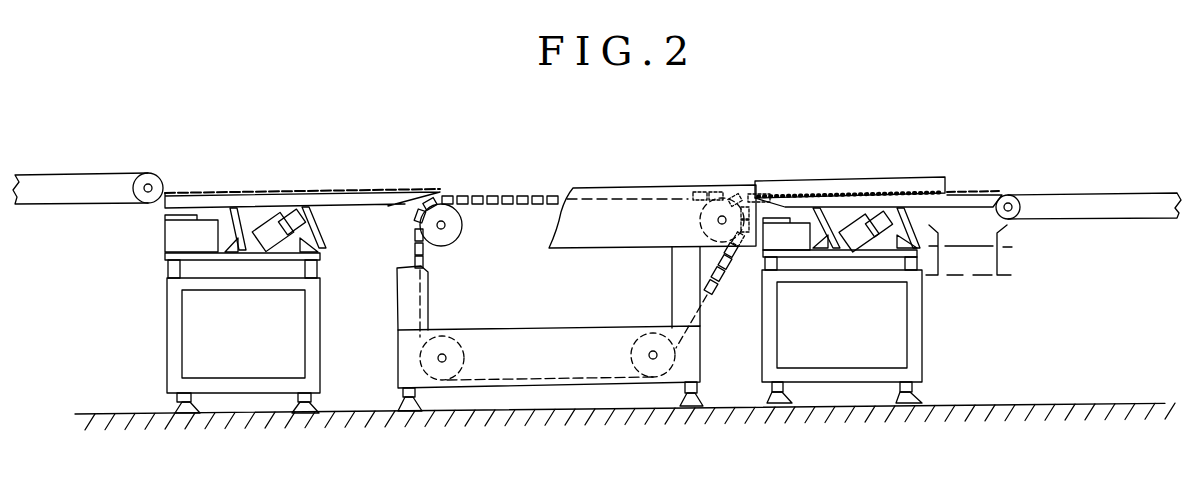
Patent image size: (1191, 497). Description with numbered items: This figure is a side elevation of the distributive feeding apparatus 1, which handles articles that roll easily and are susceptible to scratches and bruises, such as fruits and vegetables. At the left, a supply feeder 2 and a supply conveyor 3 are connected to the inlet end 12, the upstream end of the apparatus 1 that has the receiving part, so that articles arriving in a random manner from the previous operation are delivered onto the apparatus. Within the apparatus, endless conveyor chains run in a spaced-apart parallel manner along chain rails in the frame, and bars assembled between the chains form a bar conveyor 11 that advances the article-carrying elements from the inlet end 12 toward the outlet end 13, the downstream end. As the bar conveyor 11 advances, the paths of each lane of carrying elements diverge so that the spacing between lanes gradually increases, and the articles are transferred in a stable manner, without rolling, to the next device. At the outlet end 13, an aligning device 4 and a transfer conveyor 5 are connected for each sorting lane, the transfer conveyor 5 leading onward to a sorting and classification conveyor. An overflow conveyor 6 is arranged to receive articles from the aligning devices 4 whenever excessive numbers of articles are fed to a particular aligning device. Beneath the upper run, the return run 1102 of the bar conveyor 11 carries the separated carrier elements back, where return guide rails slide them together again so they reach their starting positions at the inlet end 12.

The distributive feeding apparatus 1 is at (597, 187).
The supply feeder 2 is at (293, 193).
The supply conveyor 3 is at (59, 174).
The aligning device 4 is at (855, 180).
The transfer conveyor 5 is at (1055, 194).
The overflow conveyor 6 is at (969, 252).
The bar conveyor 11 is at (516, 195).
The inlet end 12 is at (443, 193).
The outlet end 13 is at (742, 193).
The return run 1102 is at (547, 368).